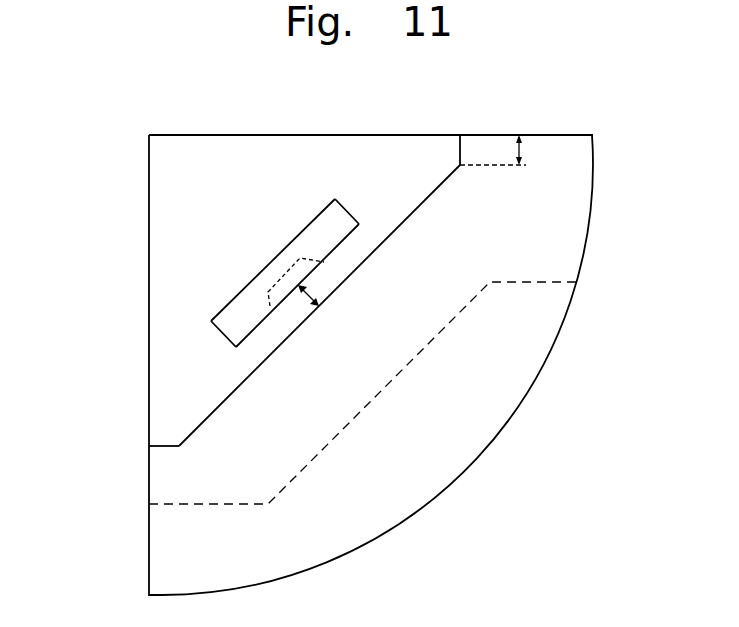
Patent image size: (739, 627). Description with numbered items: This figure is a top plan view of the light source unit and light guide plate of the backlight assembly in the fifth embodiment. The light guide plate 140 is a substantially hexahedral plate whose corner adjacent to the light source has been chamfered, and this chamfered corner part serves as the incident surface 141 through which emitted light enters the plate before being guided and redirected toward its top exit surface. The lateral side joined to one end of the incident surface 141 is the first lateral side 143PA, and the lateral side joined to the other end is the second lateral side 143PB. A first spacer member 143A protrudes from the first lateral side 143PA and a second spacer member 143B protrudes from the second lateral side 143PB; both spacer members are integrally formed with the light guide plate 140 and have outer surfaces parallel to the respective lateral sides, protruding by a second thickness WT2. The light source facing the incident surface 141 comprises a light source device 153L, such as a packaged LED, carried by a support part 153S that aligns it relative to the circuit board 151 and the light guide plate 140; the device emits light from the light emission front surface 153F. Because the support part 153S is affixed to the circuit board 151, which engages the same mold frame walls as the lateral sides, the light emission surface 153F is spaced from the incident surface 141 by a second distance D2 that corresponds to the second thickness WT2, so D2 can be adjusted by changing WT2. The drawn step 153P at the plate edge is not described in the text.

The light guide plate 140 is at (575, 214).
The circuit board 151 is at (170, 218).
The second spacer member 143B is at (146, 545).
The first spacer member 143A is at (484, 130).
The first lateral side 143PA is at (559, 130).
The second thickness WT2 is at (536, 150).
The pad step portion 153P is at (162, 441).
The incident surface 141 is at (294, 332).
The second lateral side 143PB is at (162, 479).
The light source device 153L is at (305, 278).
The support part 153S is at (307, 243).
The light emission front surface 153F is at (268, 282).
The second distance D2 is at (314, 292).